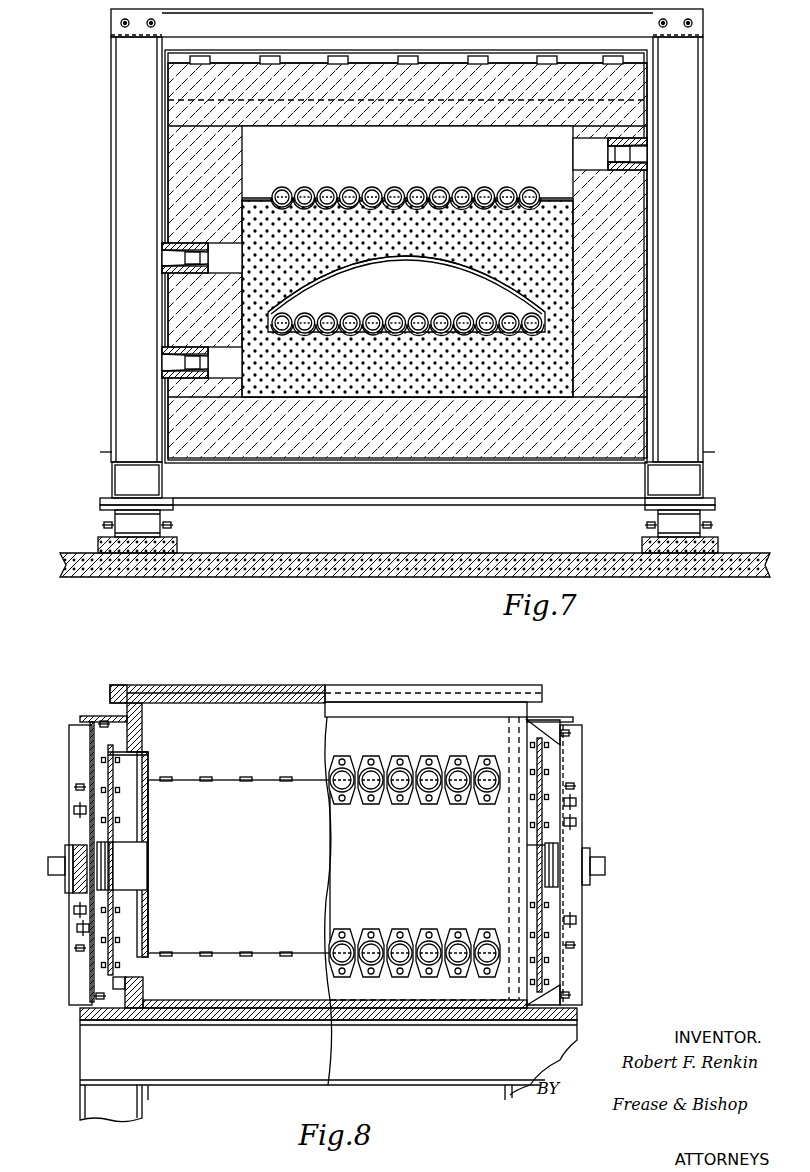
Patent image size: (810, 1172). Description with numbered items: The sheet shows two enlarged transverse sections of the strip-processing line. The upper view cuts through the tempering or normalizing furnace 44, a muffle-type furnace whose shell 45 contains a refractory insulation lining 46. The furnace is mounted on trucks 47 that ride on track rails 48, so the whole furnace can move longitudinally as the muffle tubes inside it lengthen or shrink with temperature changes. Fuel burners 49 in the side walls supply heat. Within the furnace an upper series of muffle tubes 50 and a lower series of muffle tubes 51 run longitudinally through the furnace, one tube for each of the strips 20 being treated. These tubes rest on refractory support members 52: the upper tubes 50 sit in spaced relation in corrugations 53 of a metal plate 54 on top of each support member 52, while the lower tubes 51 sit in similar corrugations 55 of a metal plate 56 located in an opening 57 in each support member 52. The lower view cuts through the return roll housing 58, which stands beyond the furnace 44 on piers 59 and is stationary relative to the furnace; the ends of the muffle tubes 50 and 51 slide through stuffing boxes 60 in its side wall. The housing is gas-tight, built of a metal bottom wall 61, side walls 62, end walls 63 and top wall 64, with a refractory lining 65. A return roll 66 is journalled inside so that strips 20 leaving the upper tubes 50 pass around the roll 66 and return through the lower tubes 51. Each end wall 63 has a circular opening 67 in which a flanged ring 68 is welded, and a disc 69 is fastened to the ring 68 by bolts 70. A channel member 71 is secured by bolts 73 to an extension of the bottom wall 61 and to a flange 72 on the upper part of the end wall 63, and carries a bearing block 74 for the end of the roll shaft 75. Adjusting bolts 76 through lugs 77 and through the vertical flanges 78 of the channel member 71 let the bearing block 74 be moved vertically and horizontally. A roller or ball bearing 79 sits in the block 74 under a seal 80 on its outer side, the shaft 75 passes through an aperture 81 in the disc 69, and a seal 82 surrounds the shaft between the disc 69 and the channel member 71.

In FIG. 7, the strips 20 is at (407, 237).
In FIG. 8, the strips 20 is at (367, 850).
In FIG. 7, the tempering or normalizing furnace 44 is at (427, 259).
In FIG. 7, the shell 45 is at (655, 330).
In FIG. 7, the refractory insulation lining 46 is at (517, 112).
In FIG. 7, the trucks 47 is at (110, 525).
In FIG. 7, the track rails 48 is at (140, 555).
In FIG. 7, the fuel burners 49 is at (185, 262).
In FIG. 7, the upper series of muffle tubes 50 is at (350, 188).
In FIG. 8, the upper series of muffle tubes 50 is at (403, 768).
In FIG. 7, the lower series of muffle tubes 51 is at (328, 313).
In FIG. 8, the lower series of muffle tubes 51 is at (375, 940).
In FIG. 7, the refractory support members 52 is at (562, 357).
In FIG. 7, the corrugations 53 is at (284, 207).
In FIG. 7, the metal plate 54 is at (553, 199).
In FIG. 7, the corrugations 55 is at (327, 335).
In FIG. 7, the metal plate 56 is at (315, 275).
In FIG. 7, the opening 57 is at (409, 286).
In FIG. 8, the return roll housing 58 is at (337, 888).
In FIG. 8, the piers 59 is at (140, 1100).
In FIG. 8, the stuffing boxes 60 is at (441, 805).
In FIG. 8, the bottom wall 61 is at (237, 1015).
In FIG. 8, the side walls 62 is at (446, 997).
In FIG. 8, the end walls 63 is at (140, 992).
In FIG. 8, the top wall 64 is at (248, 684).
In FIG. 8, the refractory lining 65 is at (222, 1002).
In FIG. 8, the return roll 66 is at (290, 925).
In FIG. 8, the circular opening 67 is at (141, 748).
In FIG. 8, the flanged ring 68 is at (125, 756).
In FIG. 8, the disc 69 is at (113, 805).
In FIG. 8, the bolts 70 is at (90, 762).
In FIG. 8, the channel member 71 is at (92, 738).
In FIG. 8, the flange 72 is at (92, 716).
In FIG. 8, the bolts 73 is at (104, 719).
In FIG. 8, the bearing block 74 is at (78, 913).
In FIG. 8, the roll shaft 75 is at (55, 873).
In FIG. 8, the adjusting bolts 76 is at (75, 787).
In FIG. 8, the lugs 77 is at (75, 811).
In FIG. 8, the vertical flanges 78 is at (333, 856).
In FIG. 8, the roller or ball bearing 79 is at (78, 880).
In FIG. 8, the seal 80 is at (65, 852).
In FIG. 8, the aperture 81 is at (115, 837).
In FIG. 8, the seal 82 is at (100, 868).